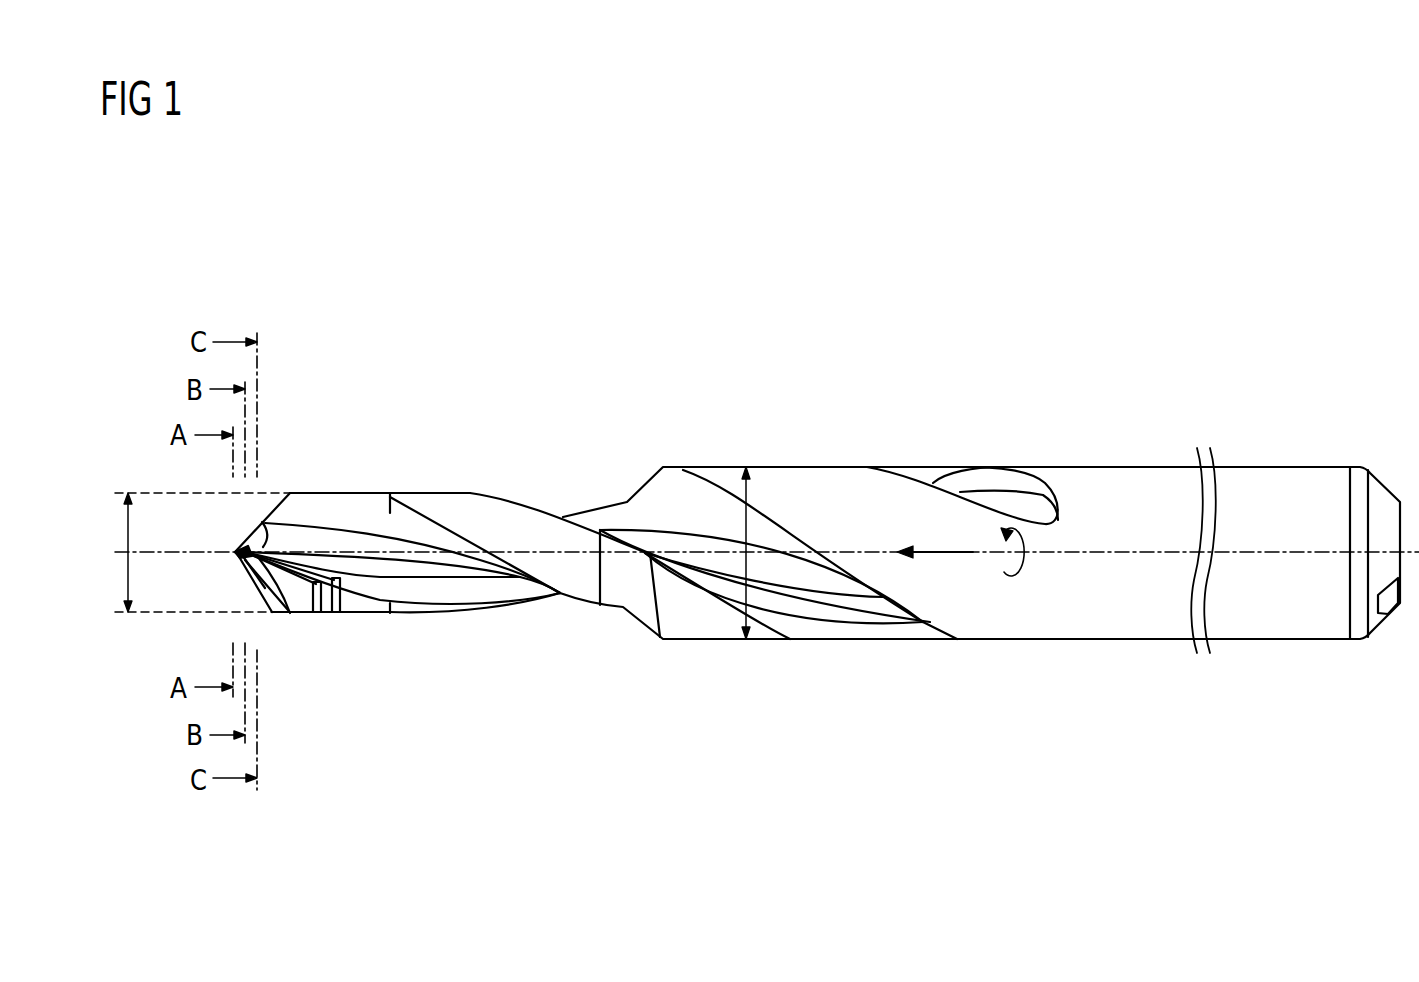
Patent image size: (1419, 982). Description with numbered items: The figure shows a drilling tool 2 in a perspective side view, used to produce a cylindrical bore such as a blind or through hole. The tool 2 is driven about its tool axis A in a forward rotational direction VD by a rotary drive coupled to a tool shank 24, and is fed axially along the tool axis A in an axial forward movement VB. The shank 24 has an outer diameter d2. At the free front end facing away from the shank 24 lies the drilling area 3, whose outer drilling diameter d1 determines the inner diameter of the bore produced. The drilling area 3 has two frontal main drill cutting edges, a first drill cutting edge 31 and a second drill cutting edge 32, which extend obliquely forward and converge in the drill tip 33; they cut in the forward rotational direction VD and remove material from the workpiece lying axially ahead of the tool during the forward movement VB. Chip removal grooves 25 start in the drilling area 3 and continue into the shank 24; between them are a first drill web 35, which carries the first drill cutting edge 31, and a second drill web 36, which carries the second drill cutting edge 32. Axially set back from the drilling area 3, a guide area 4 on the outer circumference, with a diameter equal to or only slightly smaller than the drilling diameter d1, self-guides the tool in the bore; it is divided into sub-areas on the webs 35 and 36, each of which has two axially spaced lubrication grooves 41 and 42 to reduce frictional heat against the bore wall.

The drilling tool 2 is at (992, 414).
The tool shank 24 is at (1030, 613).
The chip removal grooves 25 is at (643, 510).
The drilling area 3 is at (256, 602).
The first drill cutting edge 31 is at (263, 523).
The second drill cutting edge 32 is at (258, 586).
The drill tip 33 is at (236, 551).
The first drill web 35 is at (307, 510).
The second drill web 36 is at (276, 617).
The guide area 4 is at (307, 626).
The first lubrication groove 41 is at (316, 614).
The second lubrication groove 42 is at (340, 612).
The drilling diameter d1 is at (202, 552).
The shank outer diameter d2 is at (750, 553).
The forward rotational direction VD is at (1028, 560).
The axial forward movement VB is at (952, 553).
The tool axis A is at (1122, 553).